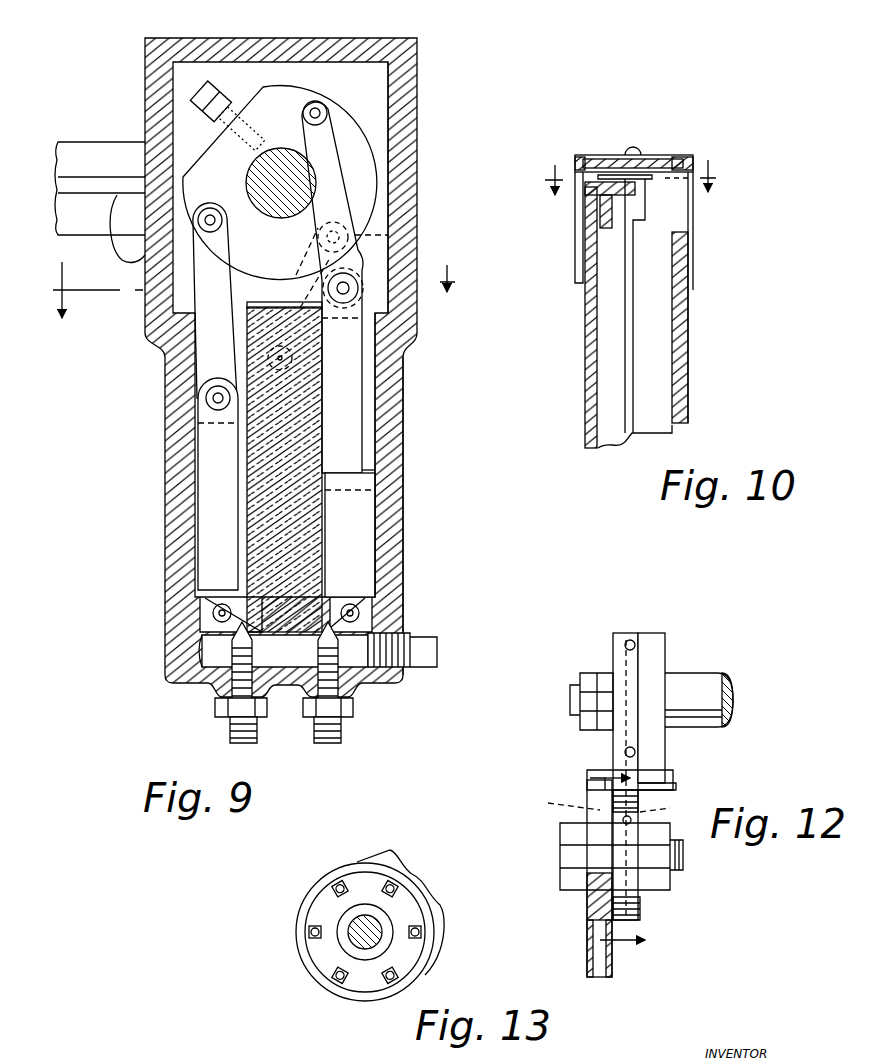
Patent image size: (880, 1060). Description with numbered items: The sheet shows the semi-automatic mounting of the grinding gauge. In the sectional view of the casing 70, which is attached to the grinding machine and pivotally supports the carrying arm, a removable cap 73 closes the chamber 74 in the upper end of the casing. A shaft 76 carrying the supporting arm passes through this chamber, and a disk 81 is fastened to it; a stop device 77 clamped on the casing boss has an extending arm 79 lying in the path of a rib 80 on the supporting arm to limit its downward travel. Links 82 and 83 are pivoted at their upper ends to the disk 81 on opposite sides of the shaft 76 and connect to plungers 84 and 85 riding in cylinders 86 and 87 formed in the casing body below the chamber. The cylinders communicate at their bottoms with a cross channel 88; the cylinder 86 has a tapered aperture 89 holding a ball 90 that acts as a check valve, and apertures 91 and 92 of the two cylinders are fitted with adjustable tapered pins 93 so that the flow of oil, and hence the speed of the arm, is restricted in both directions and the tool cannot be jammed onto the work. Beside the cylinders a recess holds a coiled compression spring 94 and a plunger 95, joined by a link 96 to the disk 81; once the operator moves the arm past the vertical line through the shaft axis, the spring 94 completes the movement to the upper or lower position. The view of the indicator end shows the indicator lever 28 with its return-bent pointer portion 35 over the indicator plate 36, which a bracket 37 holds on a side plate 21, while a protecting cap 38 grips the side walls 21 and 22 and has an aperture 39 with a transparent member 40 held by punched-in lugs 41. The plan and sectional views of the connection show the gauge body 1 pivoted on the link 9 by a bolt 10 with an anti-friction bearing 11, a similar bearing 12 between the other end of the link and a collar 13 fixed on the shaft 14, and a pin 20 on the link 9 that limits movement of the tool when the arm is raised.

In FIG. 9, the removable cap 73 is at (378, 48).
In FIG. 9, the chamber 74 is at (383, 108).
In FIG. 9, the disk 81 is at (370, 172).
In FIG. 9, the stop device 77 is at (410, 235).
In FIG. 9, the shaft 14 is at (259, 290).
In FIG. 12, the shaft 14 is at (695, 676).
In FIG. 9, the rib 80 is at (92, 185).
In FIG. 9, the extending arm 79 is at (140, 245).
In FIG. 9, the link 82 is at (215, 300).
In FIG. 9, the shaft 76 is at (278, 220).
In FIG. 9, the link 83 is at (326, 176).
In FIG. 9, the plunger 95 is at (270, 306).
In FIG. 9, the link 96 is at (329, 288).
In FIG. 9, the plunger 85 is at (329, 287).
In FIG. 9, the plunger 84 is at (218, 484).
In FIG. 9, the coiled compression spring 94 is at (380, 472).
In FIG. 9, the casing 70 is at (385, 500).
In FIG. 9, the cylinder 87 is at (350, 535).
In FIG. 9, the aperture 92 is at (375, 572).
In FIG. 9, the cylinder 86 is at (200, 590).
In FIG. 9, the ball 90 is at (213, 615).
In FIG. 9, the aperture 89 is at (200, 655).
In FIG. 9, the cross channel 88 is at (284, 483).
In FIG. 9, the aperture 91 is at (248, 628).
In FIG. 9, the adjustable tapered pins 93 is at (215, 701).
In FIG. 10, the return bent pointer portion 35 is at (640, 176).
In FIG. 10, the indicator plate 36 is at (585, 172).
In FIG. 10, the bracket 37 is at (618, 216).
In FIG. 10, the protecting cap 38 is at (695, 153).
In FIG. 10, the aperture 39 is at (606, 157).
In FIG. 10, the transparent member 40 is at (626, 150).
In FIG. 10, the punched in lugs 41 is at (682, 180).
In FIG. 10, the side plate 21 is at (590, 358).
In FIG. 10, the side wall 22 is at (690, 357).
In FIG. 10, the indicator lever 28 is at (636, 392).
In FIG. 10, the anti-friction bearing 11 is at (636, 180).
In FIG. 12, the anti-friction bearing 11 is at (613, 810).
In FIG. 13, the anti-friction bearing 11 is at (396, 888).
In FIG. 12, the anti-friction bearing 12 is at (631, 630).
In FIG. 12, the collar 13 is at (656, 650).
In FIG. 12, the pin 20 is at (680, 788).
In FIG. 12, the bolt 10 is at (683, 862).
In FIG. 13, the bolt 10 is at (375, 945).
In FIG. 12, the link 9 is at (642, 905).
In FIG. 13, the link 9 is at (432, 931).
In FIG. 12, the base plate 1 is at (587, 937).